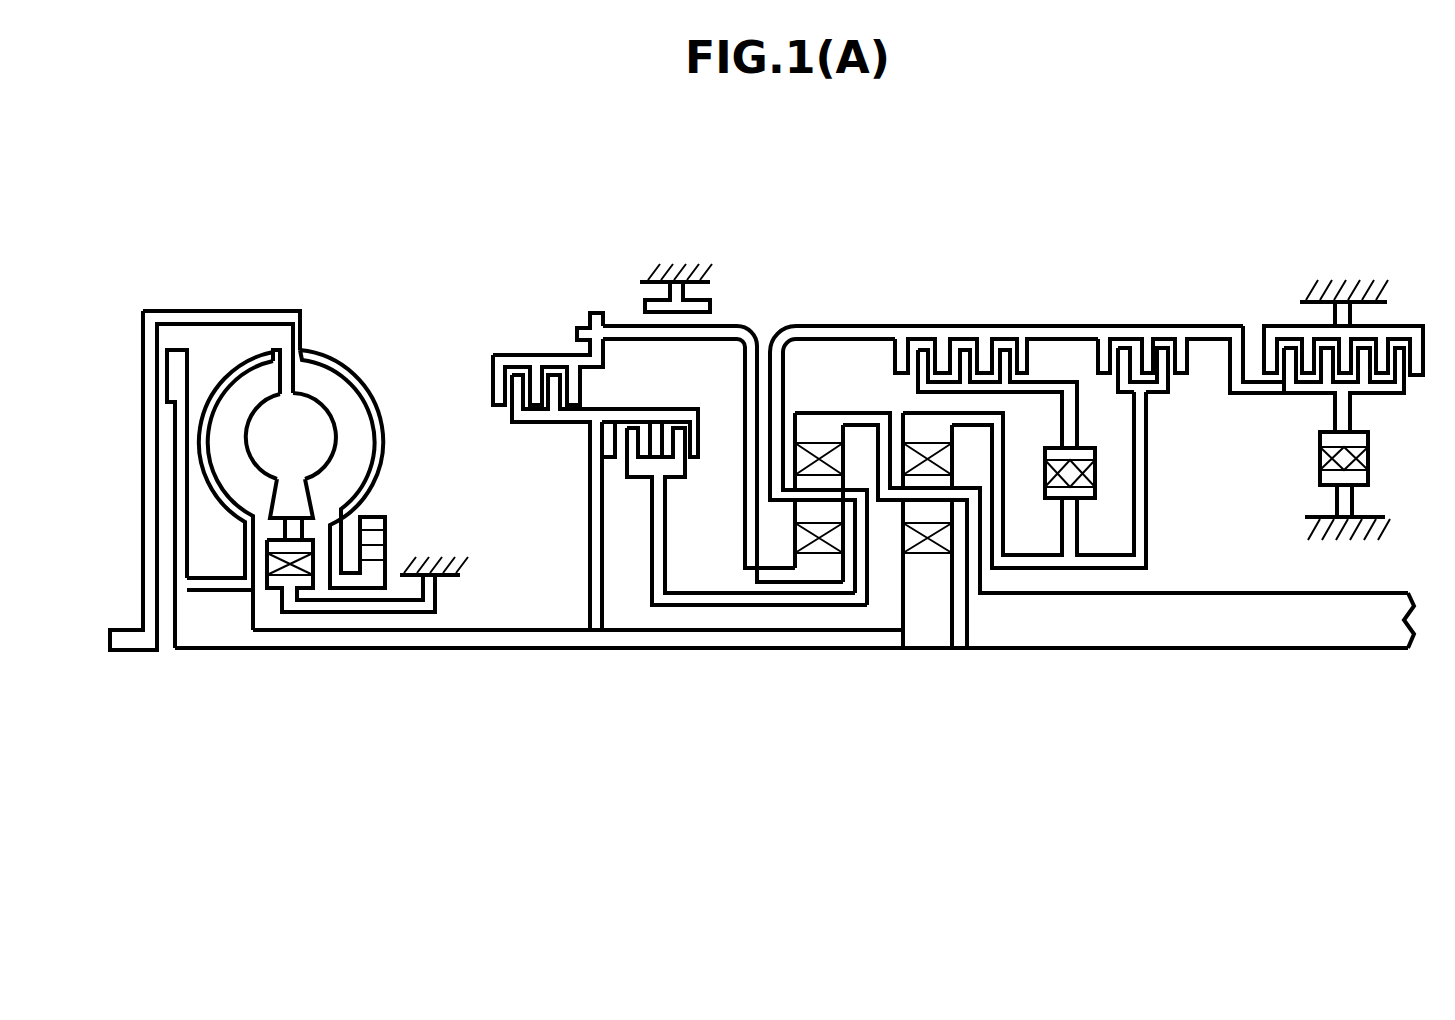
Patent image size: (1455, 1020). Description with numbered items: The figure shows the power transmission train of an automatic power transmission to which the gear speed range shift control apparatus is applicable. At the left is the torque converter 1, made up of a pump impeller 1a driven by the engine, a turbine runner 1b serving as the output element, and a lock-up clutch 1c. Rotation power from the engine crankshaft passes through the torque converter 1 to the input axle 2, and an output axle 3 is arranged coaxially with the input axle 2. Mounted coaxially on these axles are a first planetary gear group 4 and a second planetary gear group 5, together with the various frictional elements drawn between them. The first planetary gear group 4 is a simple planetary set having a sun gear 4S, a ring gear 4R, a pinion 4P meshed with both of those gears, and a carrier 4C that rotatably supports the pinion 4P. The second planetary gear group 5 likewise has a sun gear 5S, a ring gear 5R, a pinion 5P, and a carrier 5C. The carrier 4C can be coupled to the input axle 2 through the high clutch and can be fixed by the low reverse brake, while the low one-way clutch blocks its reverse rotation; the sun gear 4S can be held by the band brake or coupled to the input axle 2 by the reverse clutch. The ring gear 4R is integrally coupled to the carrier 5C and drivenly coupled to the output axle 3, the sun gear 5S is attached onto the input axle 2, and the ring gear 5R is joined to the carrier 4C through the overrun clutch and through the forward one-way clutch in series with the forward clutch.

The torque converter 1 is at (281, 446).
The pump impeller 1a is at (351, 410).
The turbine runner 1b is at (220, 424).
The lock-up clutch 1c is at (190, 364).
The input axle 2 is at (545, 640).
The output axle 3 is at (1283, 635).
The first planetary gear group 4 is at (848, 398).
The ring gear 4R is at (818, 428).
The carrier 4C is at (860, 497).
The pinion 4P is at (798, 512).
The sun gear 4S is at (815, 570).
The second planetary gear group 5 is at (890, 562).
The ring gear 5R is at (920, 428).
The carrier 5C is at (968, 490).
The pinion 5P is at (940, 510).
The sun gear 5S is at (930, 572).